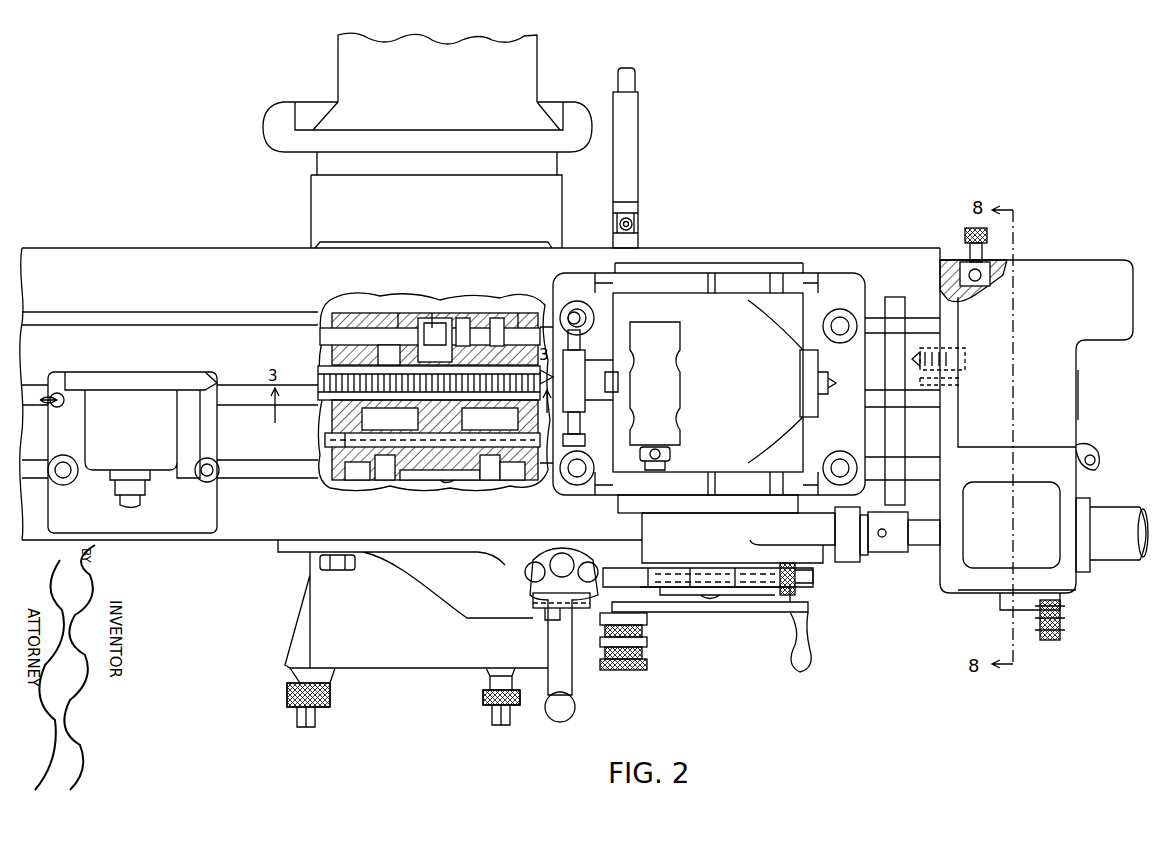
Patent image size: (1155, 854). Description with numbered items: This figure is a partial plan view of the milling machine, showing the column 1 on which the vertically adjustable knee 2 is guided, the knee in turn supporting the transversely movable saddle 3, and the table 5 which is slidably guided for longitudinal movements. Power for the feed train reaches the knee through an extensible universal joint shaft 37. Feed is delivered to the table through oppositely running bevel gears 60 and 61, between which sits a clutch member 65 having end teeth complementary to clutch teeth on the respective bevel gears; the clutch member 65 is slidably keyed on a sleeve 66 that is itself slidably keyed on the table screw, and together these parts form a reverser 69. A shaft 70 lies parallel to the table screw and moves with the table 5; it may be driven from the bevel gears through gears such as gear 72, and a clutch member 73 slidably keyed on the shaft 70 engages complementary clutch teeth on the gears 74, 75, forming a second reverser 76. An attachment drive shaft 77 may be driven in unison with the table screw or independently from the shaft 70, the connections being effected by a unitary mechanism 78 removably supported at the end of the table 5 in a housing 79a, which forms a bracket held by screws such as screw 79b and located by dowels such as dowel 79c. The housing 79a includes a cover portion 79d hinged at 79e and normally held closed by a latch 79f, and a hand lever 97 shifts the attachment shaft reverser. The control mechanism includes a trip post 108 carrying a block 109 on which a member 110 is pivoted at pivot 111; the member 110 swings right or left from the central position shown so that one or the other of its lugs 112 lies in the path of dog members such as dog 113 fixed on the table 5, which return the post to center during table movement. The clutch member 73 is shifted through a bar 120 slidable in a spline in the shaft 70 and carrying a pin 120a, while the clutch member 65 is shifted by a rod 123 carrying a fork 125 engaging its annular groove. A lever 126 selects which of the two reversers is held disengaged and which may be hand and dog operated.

The column 1 is at (538, 72).
The knee 2 is at (562, 207).
The saddle 3 is at (415, 242).
The table 5 is at (250, 542).
The extensible universal joint shaft 37 is at (638, 160).
The bevel gear 60 is at (418, 335).
The bevel gear 61 is at (497, 318).
The clutch member 65 is at (463, 318).
The sleeve 66 is at (518, 313).
The reverser 69 is at (438, 308).
The shaft 70 is at (345, 470).
The gear 72 is at (400, 348).
The clutch member 73 is at (420, 468).
The gear 74 is at (490, 482).
The gear 75 is at (385, 480).
The reverser 76 is at (462, 487).
The attachment drive shaft 77 is at (922, 545).
The unitary mechanism 78 is at (928, 587).
The housing 79a is at (953, 595).
The screw 79b is at (968, 357).
The dowel 79c is at (965, 382).
The cover portion 79d is at (1078, 395).
The hinge 79e is at (1096, 466).
The latch 79f is at (965, 234).
The hand lever 97 is at (1045, 640).
The trip post 108 is at (555, 575).
The block 109 is at (540, 600).
The member 110 is at (548, 645).
The pivot 111 is at (545, 618).
The lugs 112 is at (530, 568).
The dog member 113 is at (355, 565).
The bar 120 is at (445, 438).
The pin 120a is at (350, 433).
The rod 123 is at (332, 328).
The fork 125 is at (398, 313).
The lever 126 is at (605, 665).